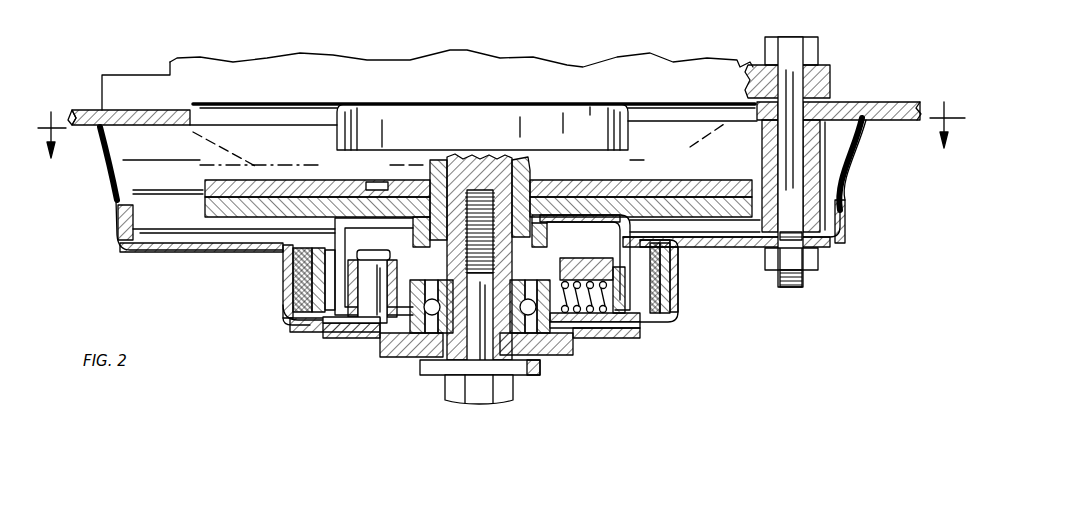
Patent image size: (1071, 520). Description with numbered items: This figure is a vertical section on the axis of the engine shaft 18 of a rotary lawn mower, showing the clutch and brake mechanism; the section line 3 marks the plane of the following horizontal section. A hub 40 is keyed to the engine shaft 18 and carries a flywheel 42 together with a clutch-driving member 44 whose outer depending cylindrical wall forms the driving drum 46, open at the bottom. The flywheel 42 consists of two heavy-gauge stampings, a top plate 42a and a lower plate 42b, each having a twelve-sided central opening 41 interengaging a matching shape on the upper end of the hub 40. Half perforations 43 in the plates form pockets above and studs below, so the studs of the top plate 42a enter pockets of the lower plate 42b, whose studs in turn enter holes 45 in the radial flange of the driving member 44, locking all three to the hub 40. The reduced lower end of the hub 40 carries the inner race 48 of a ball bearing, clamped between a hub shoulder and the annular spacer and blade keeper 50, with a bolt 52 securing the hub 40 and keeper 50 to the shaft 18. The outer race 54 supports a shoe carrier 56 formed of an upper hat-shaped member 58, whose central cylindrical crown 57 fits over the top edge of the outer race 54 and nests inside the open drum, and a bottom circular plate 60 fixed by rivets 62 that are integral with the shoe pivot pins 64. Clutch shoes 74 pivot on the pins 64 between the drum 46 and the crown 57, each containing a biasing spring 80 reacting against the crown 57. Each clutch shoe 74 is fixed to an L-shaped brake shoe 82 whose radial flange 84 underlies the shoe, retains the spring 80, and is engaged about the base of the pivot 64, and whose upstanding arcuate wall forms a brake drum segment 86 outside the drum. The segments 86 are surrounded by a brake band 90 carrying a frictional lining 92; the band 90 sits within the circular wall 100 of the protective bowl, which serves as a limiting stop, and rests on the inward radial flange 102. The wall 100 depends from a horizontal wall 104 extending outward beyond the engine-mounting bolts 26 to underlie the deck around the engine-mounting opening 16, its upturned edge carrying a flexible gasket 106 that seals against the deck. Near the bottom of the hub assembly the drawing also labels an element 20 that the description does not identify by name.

The section line 3- 3 is at (501, 109).
The engine-mounting opening 16 is at (201, 126).
The engine shaft 18 is at (493, 151).
The hub 20 is at (413, 358).
The engine-mounting bolt 26 is at (803, 60).
The hub 40 is at (530, 163).
The polygonal central opening 41 is at (448, 176).
The flywheel 42 is at (653, 177).
The top flywheel plate 42a is at (205, 183).
The lower flywheel plate 42b is at (205, 207).
The half perforation 43 is at (385, 182).
The clutch-driving member 44 is at (583, 217).
The hole 45 is at (382, 266).
The driving drum 46 is at (680, 268).
The inner race 48 is at (515, 323).
The spacer and blade keeper 50 is at (525, 371).
The bolt 52 is at (482, 398).
The outer race 54 is at (543, 321).
The shoe carrier 56 is at (623, 345).
The central cylindrical crown 57 is at (395, 273).
The upper hat-shaped member 58 is at (641, 334).
The bottom circular plate 60 is at (632, 333).
The rivet 62 is at (373, 338).
The shoe pivot pin 64 is at (368, 293).
The clutch shoe 74 is at (572, 268).
The biasing spring 80 is at (593, 311).
The brake shoe 82 is at (315, 335).
The radial flange 84 is at (348, 341).
The brake drum segment 86 is at (289, 273).
The brake band 90 is at (285, 310).
The frictional lining 92 is at (277, 245).
The circular wall 100 is at (287, 280).
The inward radial flange 102 is at (302, 326).
The horizontal wall 104 is at (177, 253).
The flexible gasket 106 is at (851, 143).